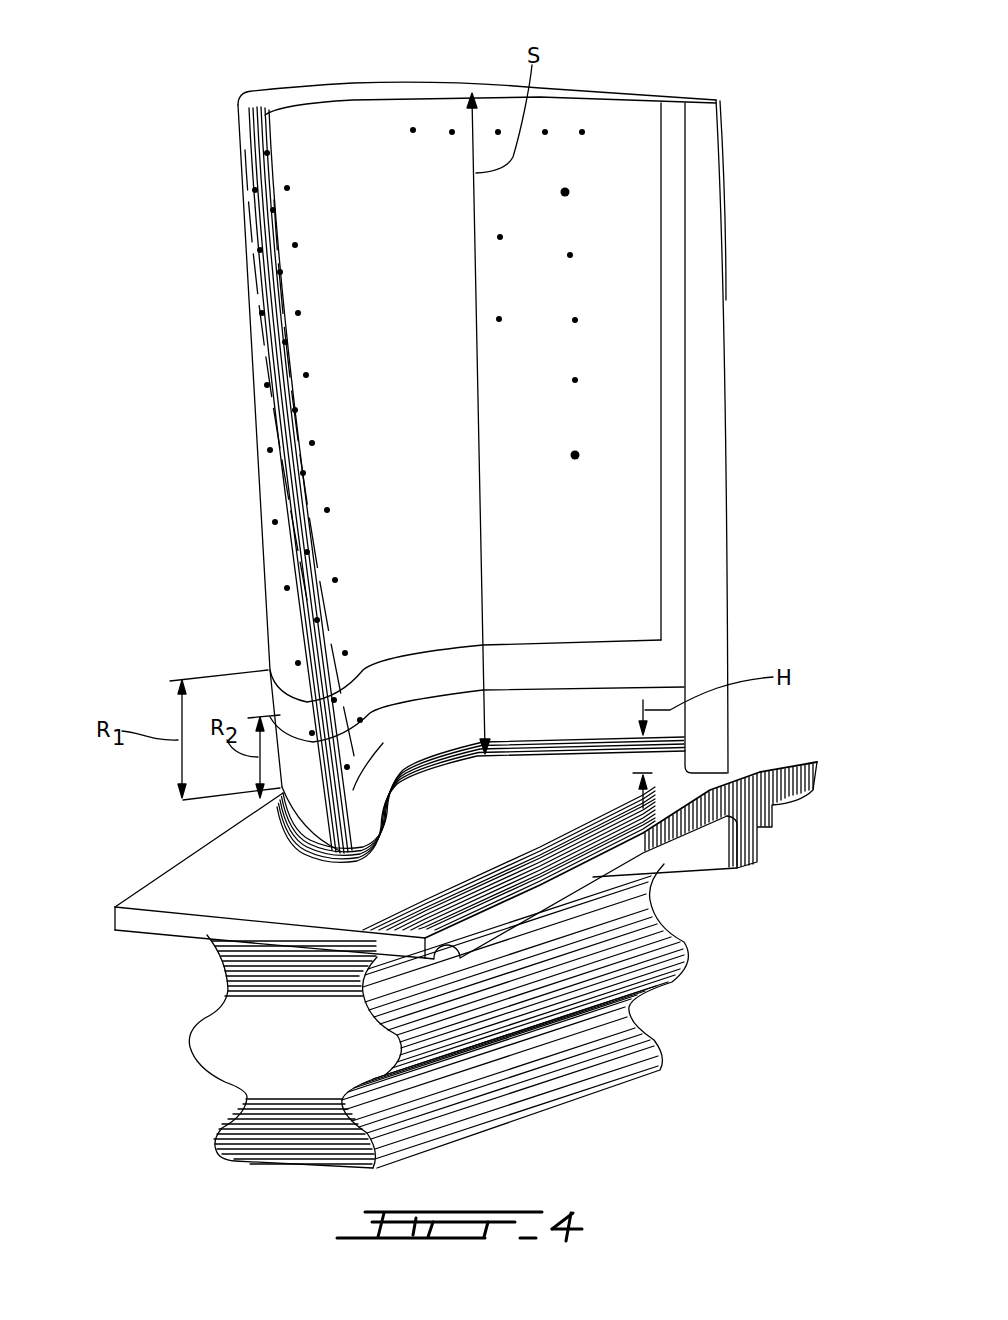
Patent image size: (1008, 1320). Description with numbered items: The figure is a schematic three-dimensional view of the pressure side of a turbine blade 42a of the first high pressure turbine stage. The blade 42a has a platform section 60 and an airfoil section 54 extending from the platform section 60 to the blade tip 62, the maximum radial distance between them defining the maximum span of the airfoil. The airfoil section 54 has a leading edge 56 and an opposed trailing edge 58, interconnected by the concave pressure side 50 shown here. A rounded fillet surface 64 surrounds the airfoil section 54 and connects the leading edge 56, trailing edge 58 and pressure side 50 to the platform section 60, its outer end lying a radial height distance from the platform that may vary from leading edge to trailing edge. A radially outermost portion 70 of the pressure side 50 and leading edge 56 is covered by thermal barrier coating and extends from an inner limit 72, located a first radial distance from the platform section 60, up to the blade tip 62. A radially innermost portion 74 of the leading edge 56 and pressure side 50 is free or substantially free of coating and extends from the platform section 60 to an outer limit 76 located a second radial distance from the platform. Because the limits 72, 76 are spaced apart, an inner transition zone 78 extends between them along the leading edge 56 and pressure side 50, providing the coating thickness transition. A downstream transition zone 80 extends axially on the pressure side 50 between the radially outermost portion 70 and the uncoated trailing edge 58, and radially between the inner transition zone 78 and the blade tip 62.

The blade 42a is at (147, 547).
The pressure side 50 is at (374, 172).
The airfoil section 54 is at (170, 310).
The leading edge 56 is at (268, 232).
The trailing edge 58 is at (707, 187).
The platform section 60 is at (762, 758).
The blade tip 62 is at (497, 97).
The fillet surface 64 is at (657, 752).
The radially outermost portion 70 is at (622, 143).
The inner limit 72 is at (632, 638).
The radially innermost portion 74 is at (277, 790).
The outer limit 76 is at (650, 683).
The inner transition zone 78 is at (593, 665).
The downstream transition zone 80 is at (680, 338).